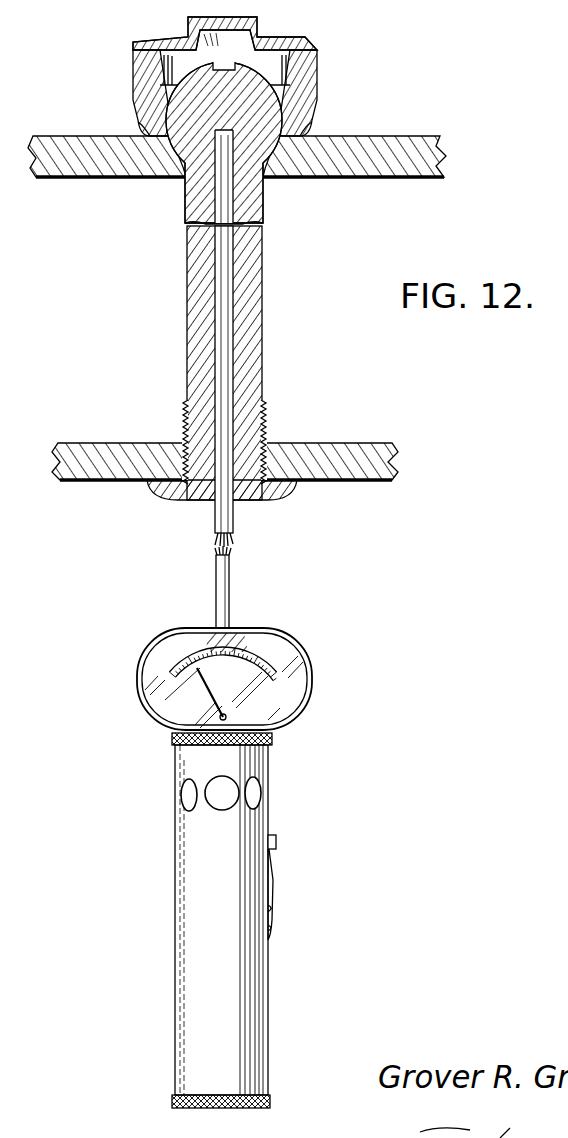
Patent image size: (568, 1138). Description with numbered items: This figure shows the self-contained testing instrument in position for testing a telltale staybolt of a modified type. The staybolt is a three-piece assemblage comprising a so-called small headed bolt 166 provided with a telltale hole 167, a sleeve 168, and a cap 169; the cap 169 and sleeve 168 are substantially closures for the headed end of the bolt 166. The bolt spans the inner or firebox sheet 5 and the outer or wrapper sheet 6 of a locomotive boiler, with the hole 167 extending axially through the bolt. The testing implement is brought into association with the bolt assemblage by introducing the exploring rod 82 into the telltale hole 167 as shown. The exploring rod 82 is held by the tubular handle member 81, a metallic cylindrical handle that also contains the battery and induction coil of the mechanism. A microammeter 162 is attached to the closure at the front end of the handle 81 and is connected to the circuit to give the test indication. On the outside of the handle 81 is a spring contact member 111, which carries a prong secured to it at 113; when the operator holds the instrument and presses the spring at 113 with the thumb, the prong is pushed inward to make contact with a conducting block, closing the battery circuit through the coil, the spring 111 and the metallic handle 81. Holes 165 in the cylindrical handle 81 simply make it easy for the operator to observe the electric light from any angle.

The outer or wrapper sheet 6 is at (404, 172).
The inner or firebox sheet 5 is at (345, 457).
The cap 169 is at (262, 20).
The sleeve 168 is at (300, 97).
The telltale hole 167 is at (220, 190).
The small headed bolt 166 is at (198, 333).
The exploring rod 82 is at (223, 596).
The microammeter 162 is at (298, 692).
The tubular handle member 81 is at (183, 943).
The holes 165 is at (254, 786).
The prong securing point 113 is at (277, 844).
The spring contact member 111 is at (273, 887).